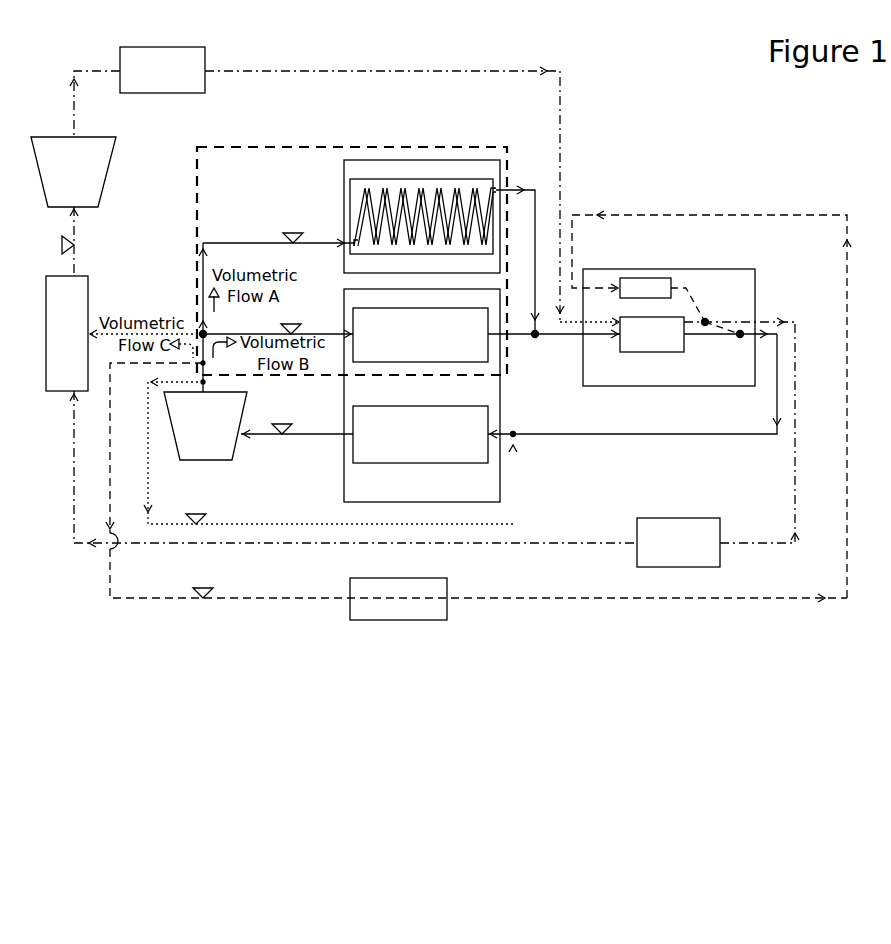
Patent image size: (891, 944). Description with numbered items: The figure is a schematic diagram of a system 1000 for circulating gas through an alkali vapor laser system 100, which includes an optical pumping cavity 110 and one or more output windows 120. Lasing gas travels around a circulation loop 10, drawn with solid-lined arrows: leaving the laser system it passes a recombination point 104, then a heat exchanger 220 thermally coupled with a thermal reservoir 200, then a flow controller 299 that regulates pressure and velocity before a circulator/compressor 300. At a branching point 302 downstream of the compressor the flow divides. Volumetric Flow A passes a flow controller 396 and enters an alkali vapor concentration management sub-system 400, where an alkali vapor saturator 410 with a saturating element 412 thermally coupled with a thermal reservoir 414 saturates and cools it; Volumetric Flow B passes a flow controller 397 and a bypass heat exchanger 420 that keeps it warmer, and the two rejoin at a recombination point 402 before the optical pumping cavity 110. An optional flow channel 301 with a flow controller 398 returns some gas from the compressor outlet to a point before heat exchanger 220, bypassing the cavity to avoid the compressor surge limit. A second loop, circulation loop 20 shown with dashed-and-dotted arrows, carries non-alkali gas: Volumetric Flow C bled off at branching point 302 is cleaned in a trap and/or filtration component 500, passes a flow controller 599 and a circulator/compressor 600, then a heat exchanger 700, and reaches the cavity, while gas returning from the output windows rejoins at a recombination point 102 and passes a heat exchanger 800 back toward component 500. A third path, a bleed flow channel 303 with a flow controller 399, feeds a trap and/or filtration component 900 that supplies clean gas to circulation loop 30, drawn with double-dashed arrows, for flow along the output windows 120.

The system 1000 is at (690, 125).
The circulation loop 10 is at (771, 439).
The circulation loop 20 is at (768, 318).
The circulation loop 30 is at (843, 332).
The alkali vapor laser system 100 is at (669, 327).
The recombination point 102 is at (708, 318).
The recombination point 104 is at (738, 340).
The optical pumping cavity 110 is at (652, 334).
The output windows 120 is at (645, 288).
The thermal reservoir 200 is at (423, 486).
The heat exchanger 220 is at (420, 434).
The flow controller 299 is at (288, 423).
The circulator/compressor 300 is at (205, 426).
The flow channel 301 is at (145, 405).
The branching point 302 is at (199, 330).
The bleed flow channel 303 is at (107, 430).
The flow controller 396 is at (291, 231).
The flow controller 397 is at (296, 322).
The flow controller 398 is at (191, 512).
The flow controller 399 is at (197, 586).
The alkali vapor concentration management sub-system 400 is at (249, 143).
The recombination point 402 is at (538, 342).
The alkali vapor saturator 410 is at (483, 156).
The saturating element 412 is at (358, 190).
The thermal reservoir 414 is at (417, 178).
The bypass heat exchanger 420 is at (420, 335).
The trap and/or filtration component 500 is at (67, 333).
The flow controller 599 is at (60, 240).
The circulator/compressor 600 is at (73, 172).
The heat exchanger 700 is at (162, 70).
The heat exchanger 800 is at (678, 542).
The trap and/or filtration component 900 is at (398, 599).